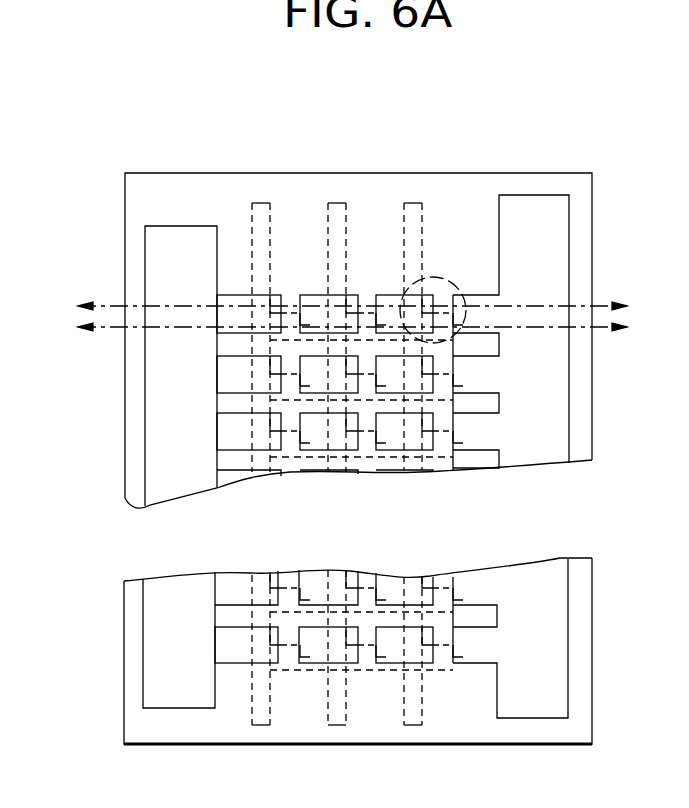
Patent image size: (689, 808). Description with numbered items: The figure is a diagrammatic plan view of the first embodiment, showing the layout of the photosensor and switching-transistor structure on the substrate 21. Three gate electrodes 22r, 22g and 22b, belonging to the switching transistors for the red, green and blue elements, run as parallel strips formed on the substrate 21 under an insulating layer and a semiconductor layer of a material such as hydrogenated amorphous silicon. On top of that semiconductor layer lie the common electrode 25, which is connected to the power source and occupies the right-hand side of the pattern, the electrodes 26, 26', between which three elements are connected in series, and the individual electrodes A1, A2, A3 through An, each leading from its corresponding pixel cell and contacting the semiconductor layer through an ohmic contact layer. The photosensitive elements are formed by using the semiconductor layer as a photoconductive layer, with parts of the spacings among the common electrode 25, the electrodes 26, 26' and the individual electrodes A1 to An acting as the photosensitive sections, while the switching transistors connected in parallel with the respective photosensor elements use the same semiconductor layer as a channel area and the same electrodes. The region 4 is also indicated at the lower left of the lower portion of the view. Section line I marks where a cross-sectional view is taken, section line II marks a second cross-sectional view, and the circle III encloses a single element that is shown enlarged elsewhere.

The substrate 21 is at (125, 457).
The substrate / display panel (lower portion) 4 is at (160, 620).
The common electrode 25 is at (529, 212).
The gate electrode 22b is at (258, 203).
The gate electrode 22g is at (334, 203).
The gate electrode 22r is at (410, 203).
The electrode 26 is at (361, 468).
The electrode 26' is at (366, 468).
The individual electrode A1 is at (229, 294).
The individual electrode A2 is at (249, 376).
The individual electrode A3 is at (249, 433).
The individual electrode An is at (246, 648).
The section line I— I is at (355, 304).
The section line II— II is at (356, 328).
The circle III is at (453, 282).